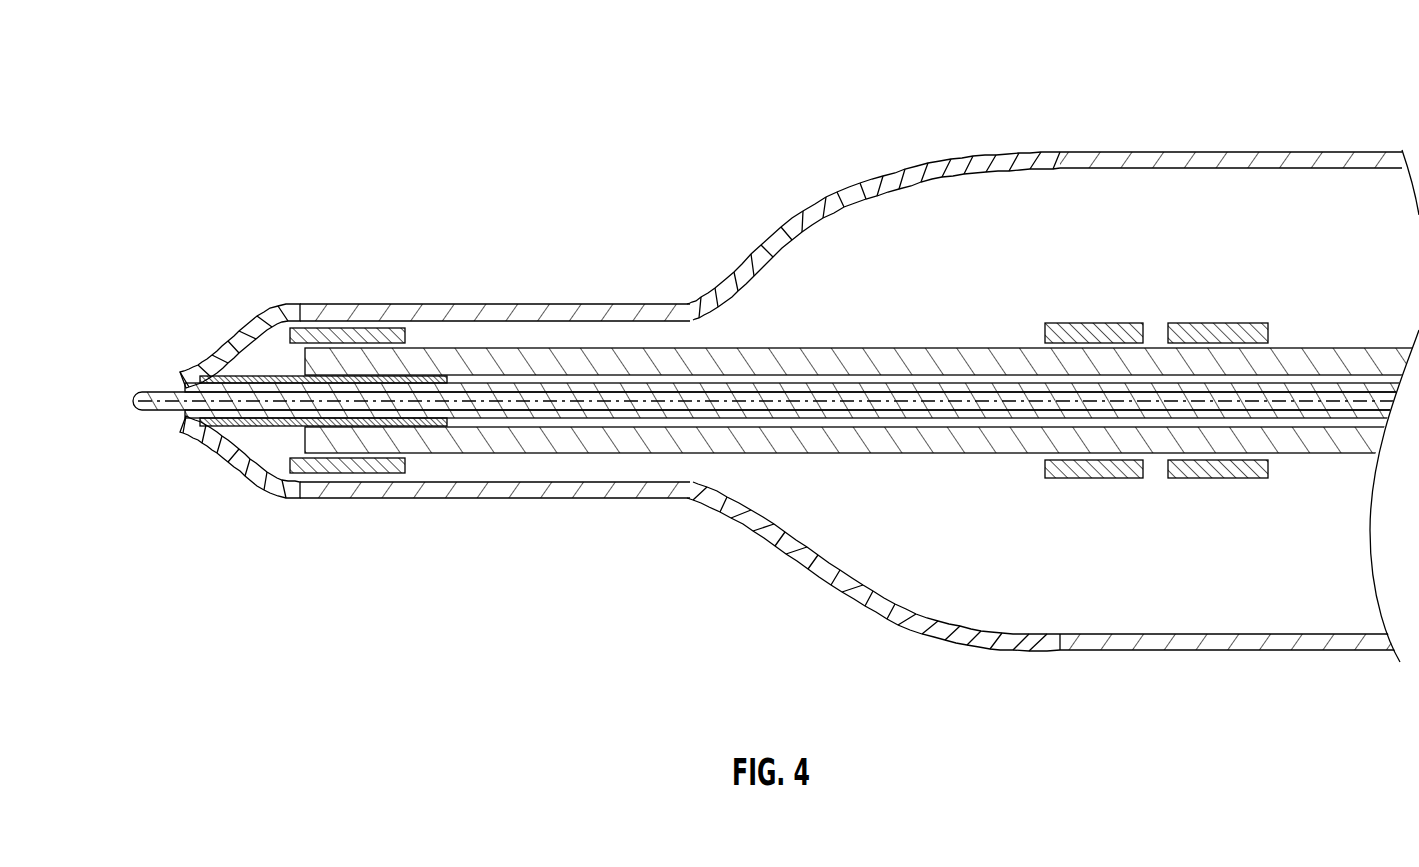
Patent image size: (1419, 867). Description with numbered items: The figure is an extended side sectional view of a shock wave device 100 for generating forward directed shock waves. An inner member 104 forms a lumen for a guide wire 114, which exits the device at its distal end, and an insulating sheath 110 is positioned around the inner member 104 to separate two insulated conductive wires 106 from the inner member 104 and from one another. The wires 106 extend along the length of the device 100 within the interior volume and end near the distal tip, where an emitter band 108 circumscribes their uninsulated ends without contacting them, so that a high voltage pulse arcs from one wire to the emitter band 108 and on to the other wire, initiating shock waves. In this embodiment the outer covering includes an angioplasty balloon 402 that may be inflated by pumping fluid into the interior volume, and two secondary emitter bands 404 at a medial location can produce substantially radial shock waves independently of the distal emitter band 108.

The shock wave device 100 is at (287, 121).
The inner member 104 is at (190, 378).
The insulated conductive wires 106 is at (523, 360).
The emitter band 108 is at (343, 333).
The insulating sheath 110 is at (233, 376).
The guide wire 114 is at (143, 392).
The angioplasty balloon 402 is at (1043, 150).
The secondary emitter bands 404 is at (1083, 316).